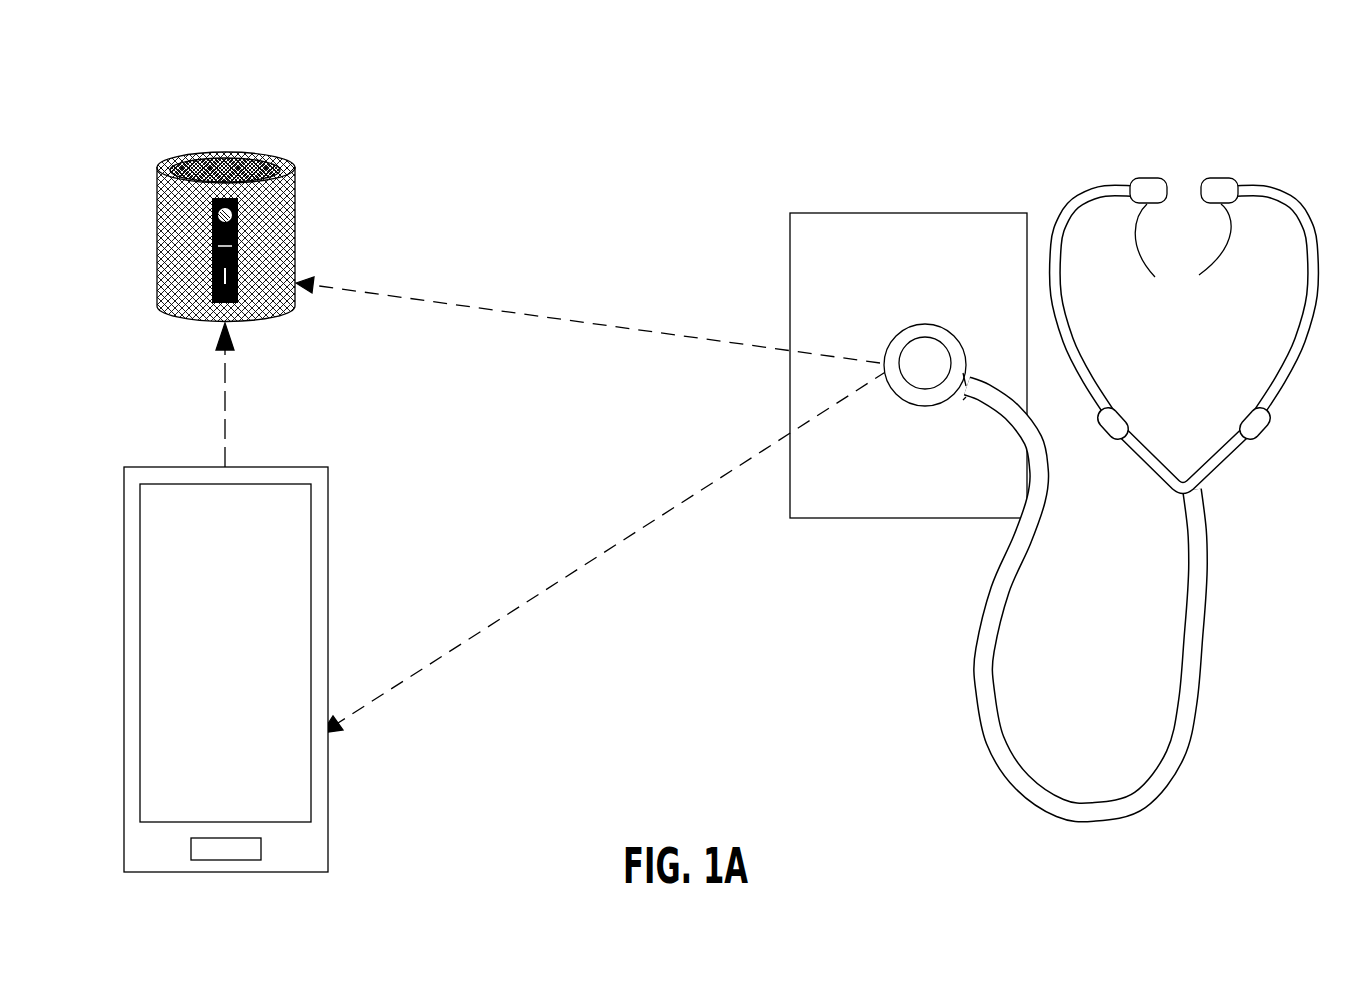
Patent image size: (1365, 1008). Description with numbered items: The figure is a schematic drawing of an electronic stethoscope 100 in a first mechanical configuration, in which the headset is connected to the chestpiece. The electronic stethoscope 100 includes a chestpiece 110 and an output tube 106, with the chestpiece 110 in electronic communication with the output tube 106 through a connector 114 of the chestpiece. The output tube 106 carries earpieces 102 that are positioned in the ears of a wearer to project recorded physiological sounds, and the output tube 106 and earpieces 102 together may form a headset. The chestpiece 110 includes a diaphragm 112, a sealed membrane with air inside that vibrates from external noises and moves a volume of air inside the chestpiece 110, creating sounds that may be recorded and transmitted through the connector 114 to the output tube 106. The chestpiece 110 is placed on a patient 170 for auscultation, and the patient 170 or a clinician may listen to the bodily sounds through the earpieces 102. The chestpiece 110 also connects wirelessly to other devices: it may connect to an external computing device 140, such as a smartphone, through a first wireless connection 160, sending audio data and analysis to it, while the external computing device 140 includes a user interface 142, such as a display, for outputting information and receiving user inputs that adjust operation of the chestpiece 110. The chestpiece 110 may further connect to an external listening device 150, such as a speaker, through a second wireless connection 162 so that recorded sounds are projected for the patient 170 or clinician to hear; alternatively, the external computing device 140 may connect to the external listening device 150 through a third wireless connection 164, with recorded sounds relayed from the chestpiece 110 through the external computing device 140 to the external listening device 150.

The electronic stethoscope 100 is at (1287, 110).
The earpieces 102 is at (1184, 333).
The output tube 106 is at (1207, 588).
The chestpiece 110 is at (918, 313).
The diaphragm 112 is at (929, 353).
The connector 114 is at (965, 385).
The external computing device 140 is at (227, 669).
The user interface 142 is at (312, 579).
The external listening device 150 is at (266, 158).
The first wireless connection 160 is at (522, 610).
The second wireless connection 162 is at (568, 321).
The third wireless connection 164 is at (226, 415).
The patient 170 is at (928, 213).